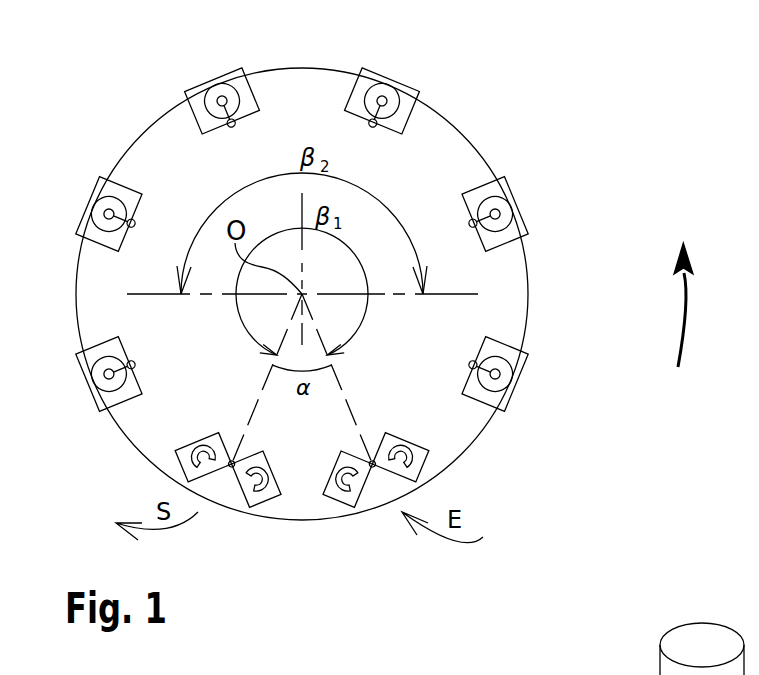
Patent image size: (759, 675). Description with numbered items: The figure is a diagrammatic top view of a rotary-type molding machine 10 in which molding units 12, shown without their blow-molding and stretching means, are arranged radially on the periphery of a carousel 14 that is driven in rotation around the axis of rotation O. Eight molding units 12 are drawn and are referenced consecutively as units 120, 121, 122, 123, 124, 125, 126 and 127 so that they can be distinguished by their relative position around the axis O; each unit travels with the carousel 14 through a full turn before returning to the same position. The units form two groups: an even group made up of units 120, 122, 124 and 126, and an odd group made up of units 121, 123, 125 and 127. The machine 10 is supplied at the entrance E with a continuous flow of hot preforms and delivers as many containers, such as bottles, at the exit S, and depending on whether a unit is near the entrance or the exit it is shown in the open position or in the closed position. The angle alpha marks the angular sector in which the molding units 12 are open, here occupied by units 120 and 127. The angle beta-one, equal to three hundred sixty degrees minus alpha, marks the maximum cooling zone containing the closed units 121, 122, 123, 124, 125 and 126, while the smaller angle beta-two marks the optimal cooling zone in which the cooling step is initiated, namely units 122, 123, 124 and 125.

The rotary-type molding machine 10 is at (589, 220).
The molding unit 12 is at (532, 275).
The carousel 14 is at (432, 413).
The molding unit 120 is at (342, 519).
The molding unit 121 is at (525, 363).
The molding unit 122 is at (513, 190).
The molding unit 123 is at (367, 67).
The molding unit 124 is at (199, 87).
The molding unit 125 is at (97, 185).
The molding unit 126 is at (82, 362).
The molding unit 127 is at (265, 518).